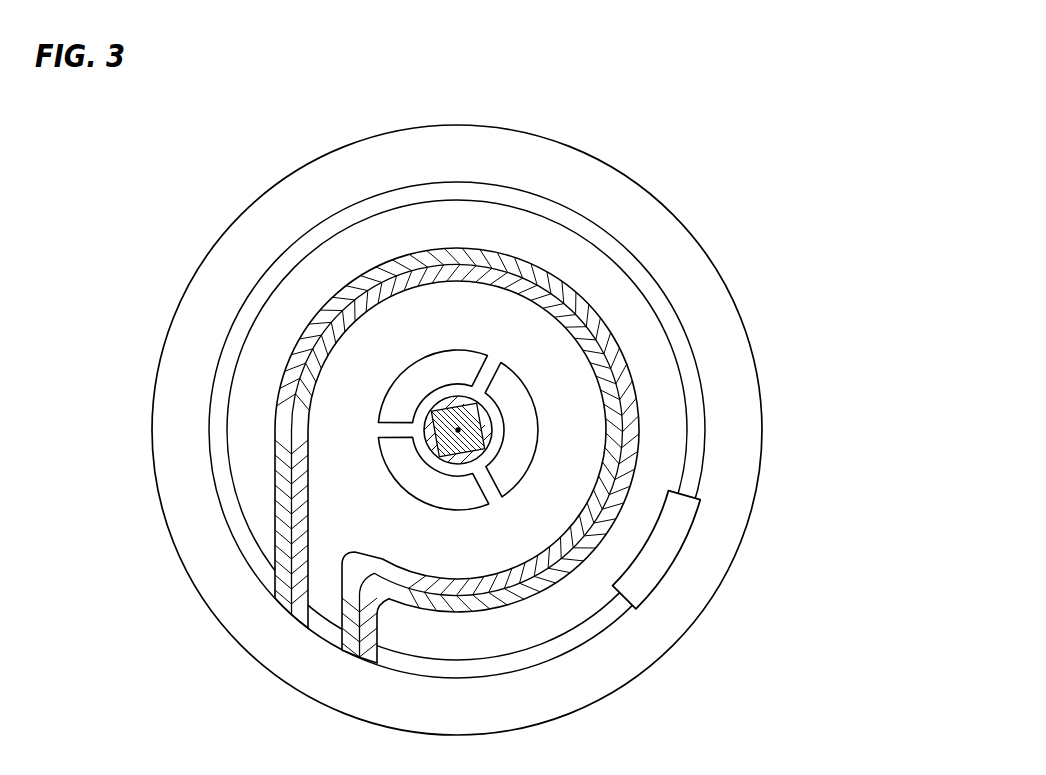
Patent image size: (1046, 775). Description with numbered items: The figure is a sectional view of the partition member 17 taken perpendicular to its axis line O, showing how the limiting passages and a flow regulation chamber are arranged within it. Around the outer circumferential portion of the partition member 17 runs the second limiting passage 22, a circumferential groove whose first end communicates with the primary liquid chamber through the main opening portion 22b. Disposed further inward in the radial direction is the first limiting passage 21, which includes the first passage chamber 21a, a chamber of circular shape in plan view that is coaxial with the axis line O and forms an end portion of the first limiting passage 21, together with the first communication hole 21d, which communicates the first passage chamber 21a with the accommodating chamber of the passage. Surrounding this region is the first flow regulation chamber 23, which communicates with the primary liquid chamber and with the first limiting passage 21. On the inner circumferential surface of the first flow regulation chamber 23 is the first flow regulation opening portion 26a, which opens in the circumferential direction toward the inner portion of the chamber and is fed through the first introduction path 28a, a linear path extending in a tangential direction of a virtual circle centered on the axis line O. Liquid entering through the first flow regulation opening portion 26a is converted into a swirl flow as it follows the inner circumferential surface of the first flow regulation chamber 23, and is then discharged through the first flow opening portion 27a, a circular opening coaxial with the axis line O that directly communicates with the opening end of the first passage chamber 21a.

The partition member 17 is at (716, 115).
The axis line O is at (458, 430).
The first limiting passage 21 is at (863, 266).
The first passage chamber 21a is at (502, 351).
The first communication hole 21d is at (500, 380).
The first flow regulation chamber 23 is at (333, 403).
The first flow regulation opening portion 26a is at (348, 553).
The first introduction path 28a is at (305, 605).
The first flow opening portion 27a is at (493, 492).
The second limiting passage 22 is at (755, 565).
The main opening portion 22b is at (655, 586).